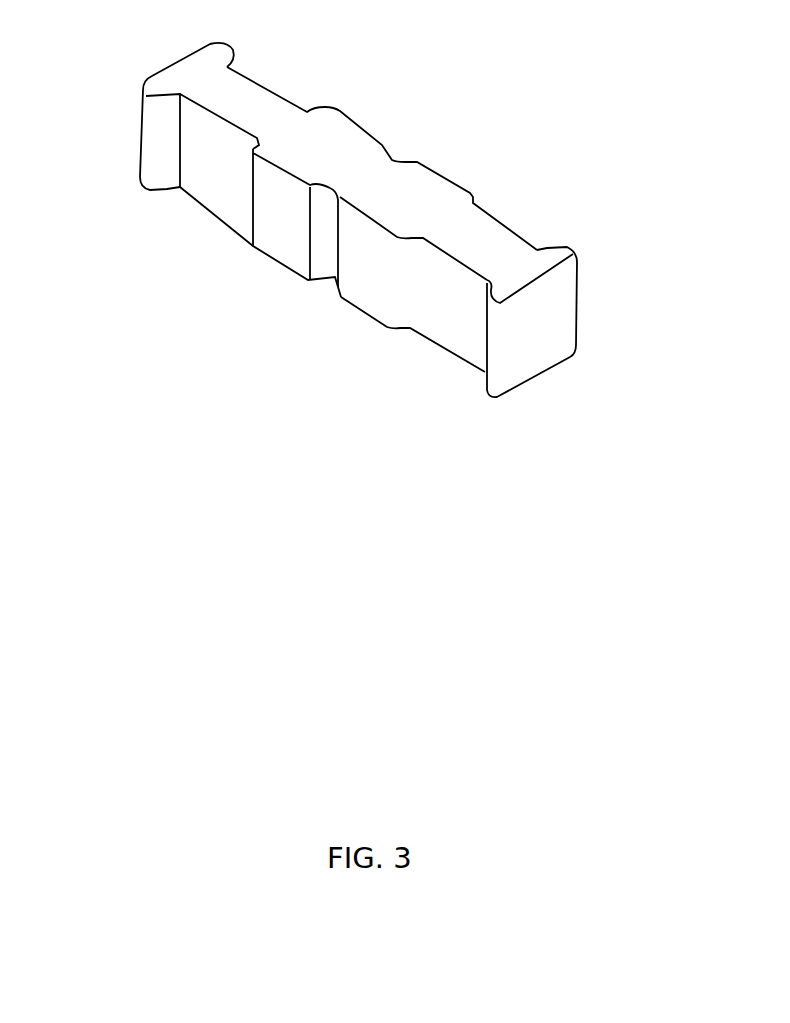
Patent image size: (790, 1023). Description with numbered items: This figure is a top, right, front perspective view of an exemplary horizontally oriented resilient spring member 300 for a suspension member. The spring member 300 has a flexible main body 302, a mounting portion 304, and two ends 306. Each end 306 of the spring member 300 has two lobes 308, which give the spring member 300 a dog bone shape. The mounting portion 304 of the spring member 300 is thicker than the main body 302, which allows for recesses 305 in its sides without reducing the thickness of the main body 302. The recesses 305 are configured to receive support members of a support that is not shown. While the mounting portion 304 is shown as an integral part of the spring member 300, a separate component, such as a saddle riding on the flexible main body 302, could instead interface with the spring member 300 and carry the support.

The spring member 300 is at (520, 55).
The flexible main body 302 is at (253, 100).
The mounting portion 304 is at (363, 173).
The recesses 305 is at (322, 252).
The ends 306 is at (178, 220).
The lobes 308 is at (162, 88).